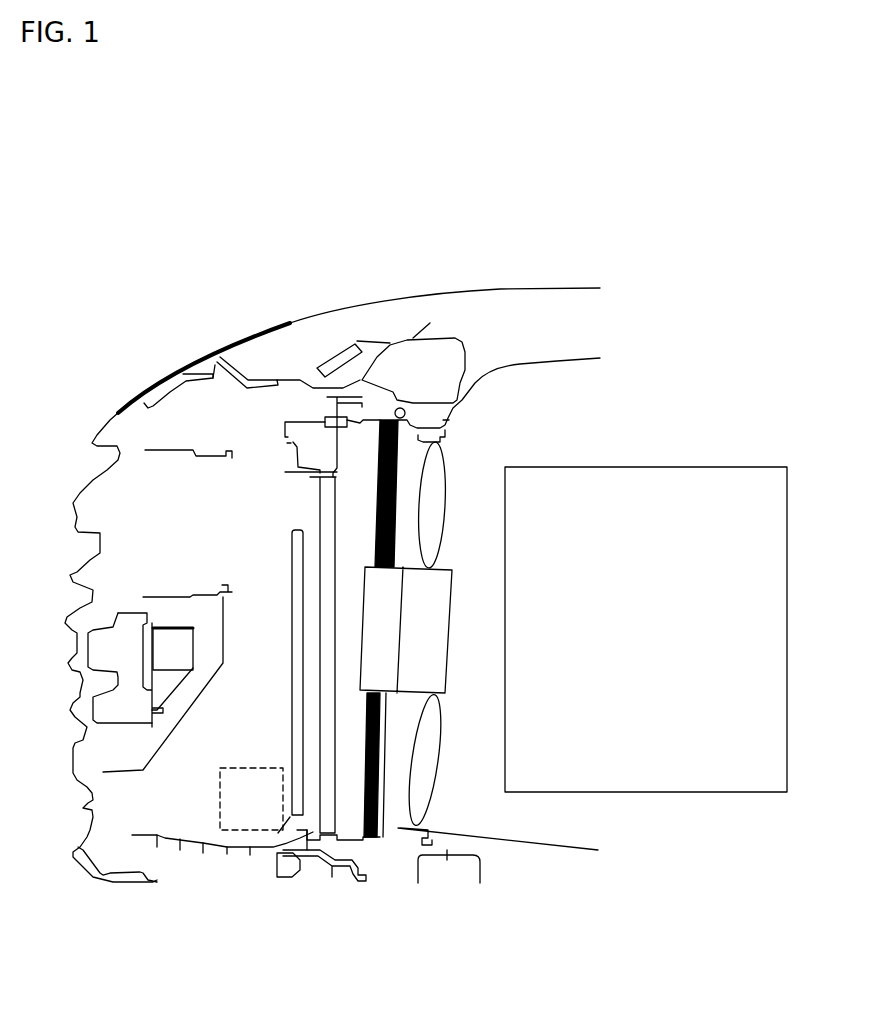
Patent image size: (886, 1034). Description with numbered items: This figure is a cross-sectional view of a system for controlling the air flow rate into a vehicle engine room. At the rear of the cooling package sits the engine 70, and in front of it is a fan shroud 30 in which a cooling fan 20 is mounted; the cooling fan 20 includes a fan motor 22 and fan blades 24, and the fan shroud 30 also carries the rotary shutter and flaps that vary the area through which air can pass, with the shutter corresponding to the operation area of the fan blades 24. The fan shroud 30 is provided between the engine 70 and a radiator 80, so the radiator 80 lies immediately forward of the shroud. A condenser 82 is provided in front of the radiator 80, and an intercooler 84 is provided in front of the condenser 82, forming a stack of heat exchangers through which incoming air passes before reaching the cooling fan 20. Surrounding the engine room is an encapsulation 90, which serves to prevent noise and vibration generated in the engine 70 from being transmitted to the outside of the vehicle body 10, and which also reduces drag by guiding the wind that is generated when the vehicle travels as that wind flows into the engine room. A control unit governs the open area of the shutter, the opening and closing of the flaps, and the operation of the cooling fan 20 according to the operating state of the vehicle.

The vehicle body 10 is at (361, 881).
The cooling fan 20 is at (443, 705).
The fan motor 22 is at (447, 673).
The fan blades 24 is at (423, 797).
The fan shroud 30 is at (392, 840).
The engine 70 is at (727, 792).
The radiator 80 is at (308, 852).
The condenser 82 is at (277, 877).
The intercooler 84 is at (227, 830).
The encapsulation 90 is at (557, 358).